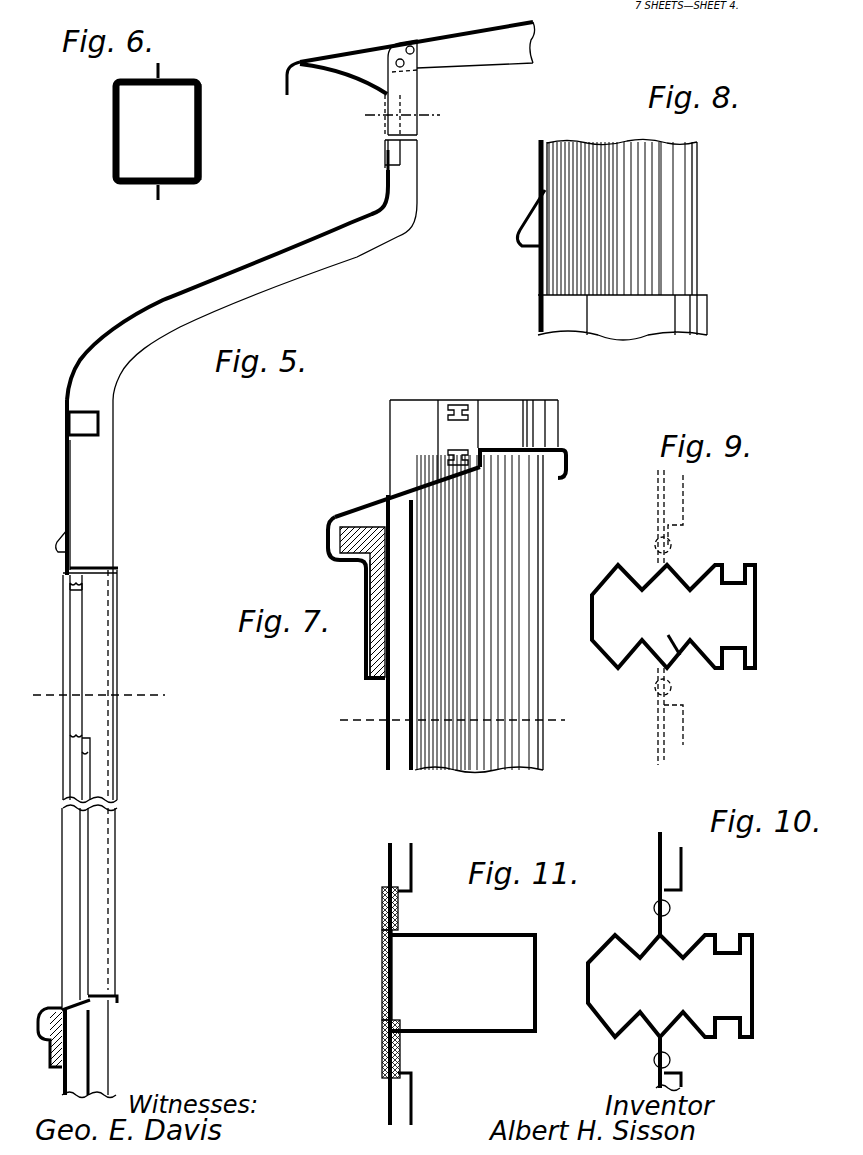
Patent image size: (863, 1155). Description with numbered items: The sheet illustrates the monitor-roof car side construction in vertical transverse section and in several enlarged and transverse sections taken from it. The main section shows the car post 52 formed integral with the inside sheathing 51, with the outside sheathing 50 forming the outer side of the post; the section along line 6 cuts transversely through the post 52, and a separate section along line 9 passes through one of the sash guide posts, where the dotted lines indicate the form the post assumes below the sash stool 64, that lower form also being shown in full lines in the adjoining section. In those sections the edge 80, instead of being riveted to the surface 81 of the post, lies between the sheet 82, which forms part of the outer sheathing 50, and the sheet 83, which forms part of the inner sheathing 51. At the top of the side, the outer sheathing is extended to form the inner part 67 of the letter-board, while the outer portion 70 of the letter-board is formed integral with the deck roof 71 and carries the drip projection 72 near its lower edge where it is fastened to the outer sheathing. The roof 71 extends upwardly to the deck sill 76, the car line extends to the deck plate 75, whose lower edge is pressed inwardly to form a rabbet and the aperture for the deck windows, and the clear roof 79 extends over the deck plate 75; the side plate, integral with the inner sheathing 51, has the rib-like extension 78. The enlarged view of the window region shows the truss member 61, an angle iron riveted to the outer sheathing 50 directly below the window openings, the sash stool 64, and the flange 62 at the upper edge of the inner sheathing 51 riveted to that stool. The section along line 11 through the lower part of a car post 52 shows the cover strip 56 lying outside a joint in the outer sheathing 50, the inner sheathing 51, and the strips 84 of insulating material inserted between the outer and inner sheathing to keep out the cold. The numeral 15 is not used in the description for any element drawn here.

In FIG. 5, the section line 6— 6 is at (407, 114).
In FIG. 5, the section line 9— 9 is at (102, 711).
In FIG. 7, the section line 11— 11 is at (456, 731).
In FIG. 6, the post 15 is at (112, 131).
In FIG. 5, the outside sheathing 50 is at (62, 1086).
In FIG. 7, the outside sheathing 50 is at (386, 746).
In FIG. 9, the outside sheathing 50 is at (657, 490).
In FIG. 10, the outside sheathing 50 is at (657, 856).
In FIG. 11, the outside sheathing 50 is at (387, 858).
In FIG. 5, the inside sheathing 51 is at (72, 1045).
In FIG. 7, the inside sheathing 51 is at (413, 746).
In FIG. 9, the inside sheathing 51 is at (686, 500).
In FIG. 10, the inside sheathing 51 is at (685, 870).
In FIG. 11, the inside sheathing 51 is at (413, 863).
In FIG. 6, the car post 52 is at (202, 131).
In FIG. 5, the car post 52 is at (113, 546).
In FIG. 7, the car post 52 is at (532, 574).
In FIG. 9, the car post 52 is at (673, 616).
In FIG. 10, the car post 52 is at (670, 986).
In FIG. 11, the car post 52 is at (476, 934).
In FIG. 7, the cover strip 56 is at (362, 636).
In FIG. 11, the cover strip 56 is at (382, 962).
In FIG. 5, the truss member 61 is at (55, 1040).
In FIG. 7, the truss member 61 is at (372, 650).
In FIG. 5, the flange 62 is at (80, 1012).
In FIG. 7, the flange 62 is at (432, 488).
In FIG. 5, the sash stool 64 is at (60, 1008).
In FIG. 7, the sash stool 64 is at (366, 510).
In FIG. 5, the inner part of the letter-board 67 is at (71, 474).
In FIG. 8, the inner part of the letter-board 67 is at (545, 218).
In FIG. 5, the outer portion of the letter-board 70 is at (65, 498).
In FIG. 8, the outer portion of the letter-board 70 is at (538, 180).
In FIG. 5, the deck roof 71 is at (178, 292).
In FIG. 8, the drip projection 72 is at (520, 248).
In FIG. 5, the deck plate 75 is at (350, 78).
In FIG. 5, the deck sill 76 is at (417, 165).
In FIG. 5, the rib-like extension 78 is at (100, 421).
In FIG. 5, the clear roof 79 is at (382, 43).
In FIG. 9, the edge 80 is at (685, 662).
In FIG. 9, the surface of the post 81 is at (677, 640).
In FIG. 9, the sheet 82 is at (655, 758).
In FIG. 9, the sheet 83 is at (688, 745).
In FIG. 11, the strips of insulating material 84 is at (382, 905).